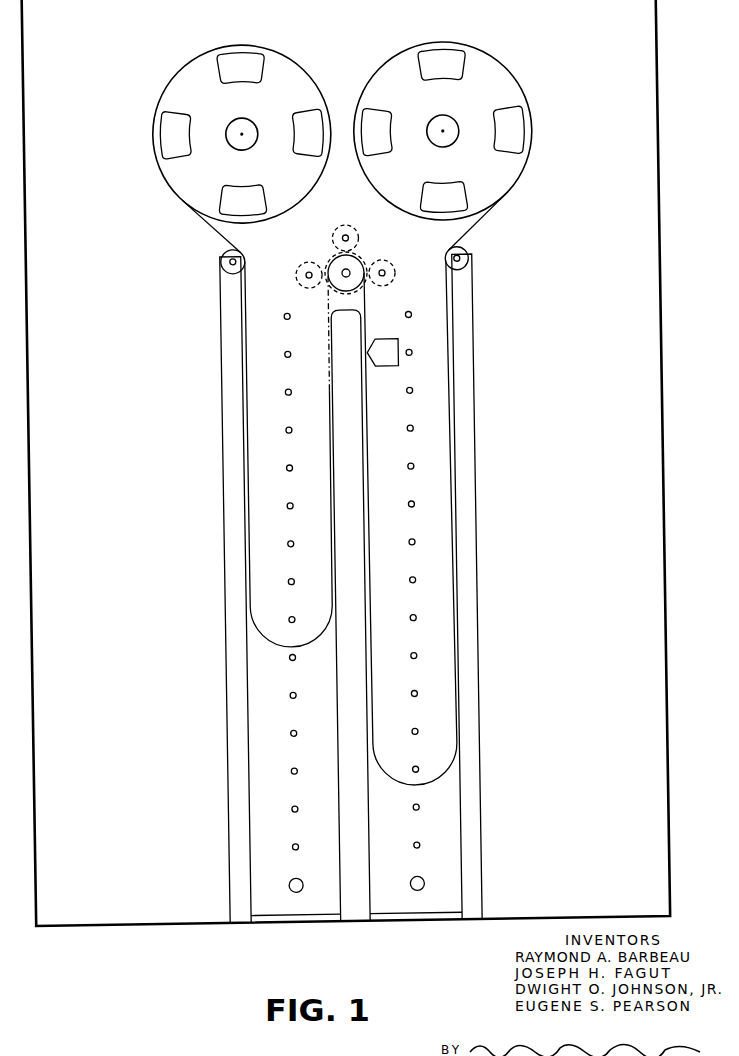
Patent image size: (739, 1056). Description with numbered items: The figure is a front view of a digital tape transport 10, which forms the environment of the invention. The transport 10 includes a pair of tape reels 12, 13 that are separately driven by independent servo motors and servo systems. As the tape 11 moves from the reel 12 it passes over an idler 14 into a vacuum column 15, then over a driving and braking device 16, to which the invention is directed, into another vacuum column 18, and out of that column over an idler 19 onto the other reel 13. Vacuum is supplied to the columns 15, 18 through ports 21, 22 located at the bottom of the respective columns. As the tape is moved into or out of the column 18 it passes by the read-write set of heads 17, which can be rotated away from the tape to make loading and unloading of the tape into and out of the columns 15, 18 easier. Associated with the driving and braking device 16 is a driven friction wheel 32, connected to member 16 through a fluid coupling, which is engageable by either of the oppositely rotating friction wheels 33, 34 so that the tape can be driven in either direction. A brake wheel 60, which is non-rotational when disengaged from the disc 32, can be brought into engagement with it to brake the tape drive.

The digital tape transport 10 is at (653, 396).
The tape 11 is at (219, 230).
The tape reel 12 is at (236, 48).
The tape reel 13 is at (465, 48).
The idler 14 is at (220, 250).
The vacuum column 15 is at (272, 709).
The driving and braking device 16 is at (352, 266).
The read-write set of heads 17 is at (394, 346).
The vacuum column 18 is at (426, 731).
The idler 19 is at (467, 249).
The port 21 is at (281, 884).
The port 22 is at (413, 882).
The driven friction wheel 32 is at (328, 254).
The friction wheel 33 is at (297, 272).
The friction wheel 34 is at (395, 273).
The brake wheel 60 is at (350, 225).